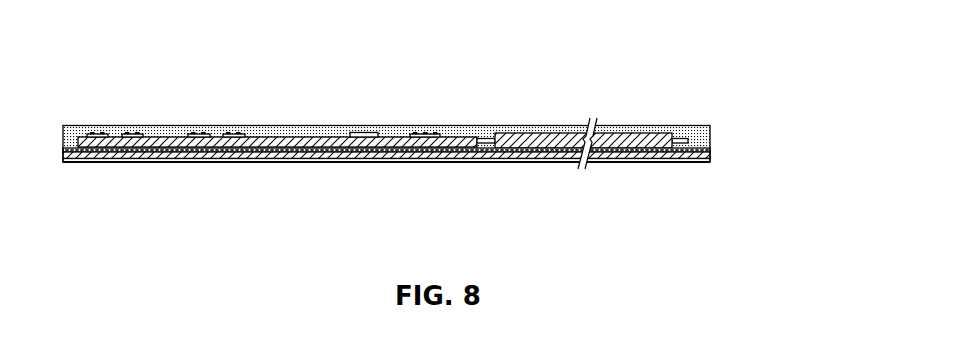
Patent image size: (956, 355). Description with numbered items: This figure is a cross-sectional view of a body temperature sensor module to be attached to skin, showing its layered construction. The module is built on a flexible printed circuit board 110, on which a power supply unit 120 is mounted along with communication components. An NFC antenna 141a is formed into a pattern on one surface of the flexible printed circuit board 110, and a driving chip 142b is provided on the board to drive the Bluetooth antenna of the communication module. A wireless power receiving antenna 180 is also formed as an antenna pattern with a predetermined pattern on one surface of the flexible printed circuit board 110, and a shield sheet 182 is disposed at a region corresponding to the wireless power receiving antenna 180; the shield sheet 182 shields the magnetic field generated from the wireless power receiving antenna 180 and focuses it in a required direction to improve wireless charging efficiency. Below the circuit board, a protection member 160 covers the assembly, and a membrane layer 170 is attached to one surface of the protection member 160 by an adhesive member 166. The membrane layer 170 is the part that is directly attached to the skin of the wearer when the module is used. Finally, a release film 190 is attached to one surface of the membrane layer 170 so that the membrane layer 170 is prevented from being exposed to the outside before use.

The flexible printed circuit board 110 is at (315, 133).
The power supply unit 120 is at (650, 133).
The NFC antenna 141a is at (232, 128).
The driving chip 142b is at (418, 131).
The protection member 160 is at (493, 134).
The adhesive member 166 is at (712, 151).
The membrane layer 170 is at (712, 155).
The wireless power receiving antenna 180 is at (130, 128).
The shield sheet 182 is at (152, 163).
The release film 190 is at (712, 159).